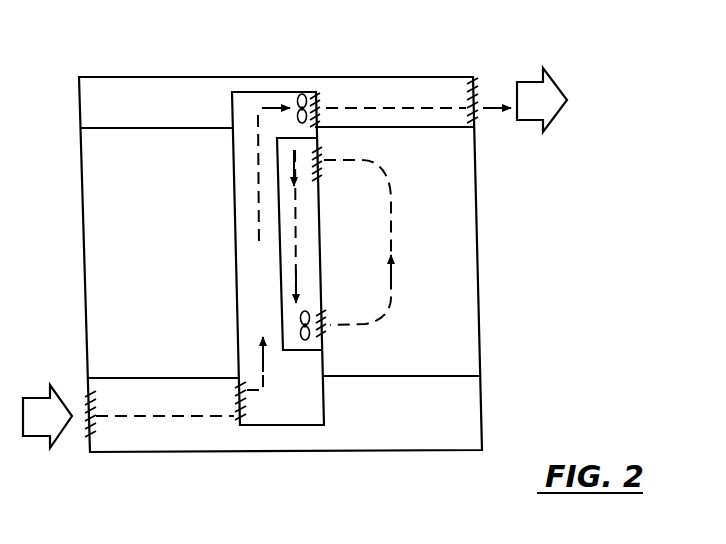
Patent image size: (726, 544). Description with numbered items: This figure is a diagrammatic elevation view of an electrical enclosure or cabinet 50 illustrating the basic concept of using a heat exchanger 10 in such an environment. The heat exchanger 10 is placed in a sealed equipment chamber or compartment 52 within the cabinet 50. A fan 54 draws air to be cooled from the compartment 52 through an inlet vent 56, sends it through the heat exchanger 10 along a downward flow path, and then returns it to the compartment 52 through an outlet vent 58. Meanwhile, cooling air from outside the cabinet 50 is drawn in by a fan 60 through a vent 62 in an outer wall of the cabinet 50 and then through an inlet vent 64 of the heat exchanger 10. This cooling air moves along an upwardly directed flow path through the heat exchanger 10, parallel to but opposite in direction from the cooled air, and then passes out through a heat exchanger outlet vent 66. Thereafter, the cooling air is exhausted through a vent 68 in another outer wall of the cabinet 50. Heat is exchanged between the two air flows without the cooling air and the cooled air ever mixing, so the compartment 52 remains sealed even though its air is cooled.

The heat exchanger 10 is at (231, 216).
The electrical enclosure or cabinet 50 is at (486, 302).
The sealed equipment chamber or compartment 52 is at (457, 208).
The fan 54 is at (307, 344).
The inlet vent 56 is at (320, 170).
The outlet vent 58 is at (322, 318).
The fan 60 is at (301, 95).
The vent 62 is at (86, 395).
The inlet vent 64 is at (236, 411).
The heat exchanger outlet vent 66 is at (317, 96).
The vent 68 is at (477, 85).